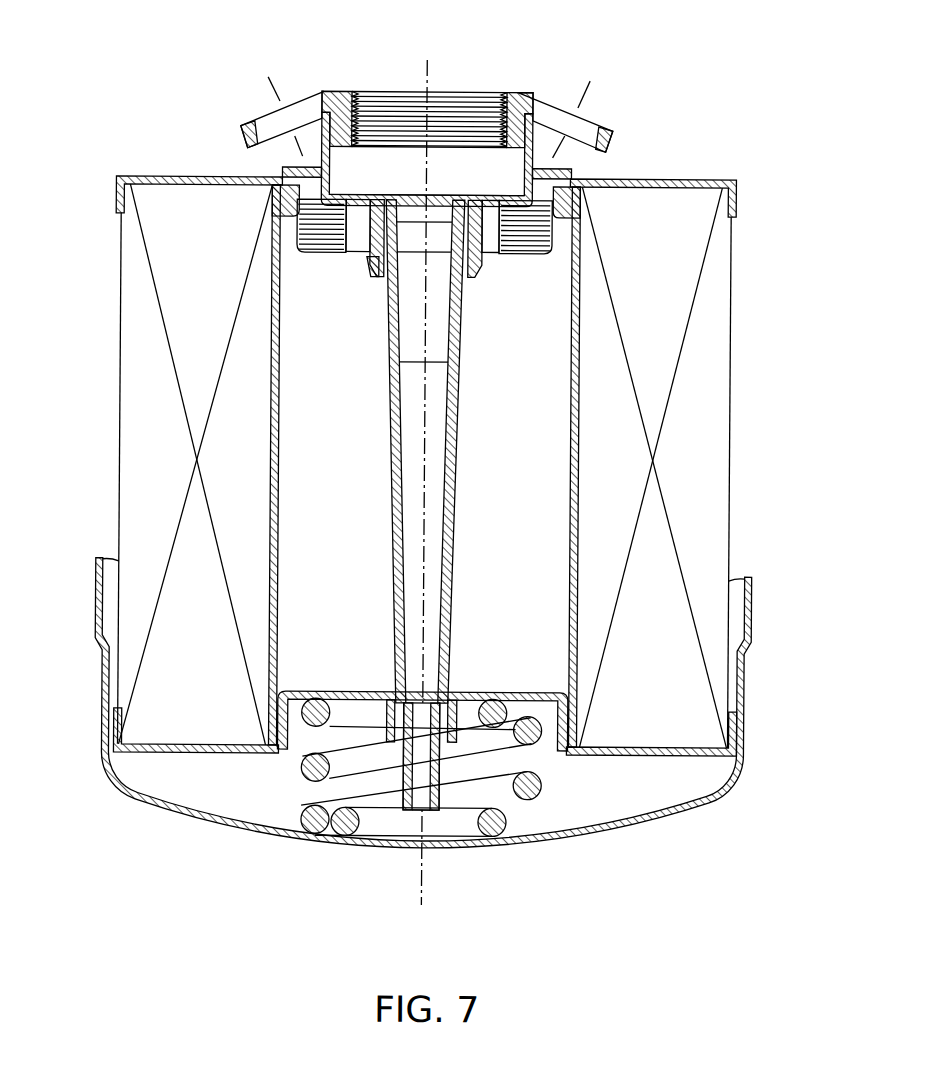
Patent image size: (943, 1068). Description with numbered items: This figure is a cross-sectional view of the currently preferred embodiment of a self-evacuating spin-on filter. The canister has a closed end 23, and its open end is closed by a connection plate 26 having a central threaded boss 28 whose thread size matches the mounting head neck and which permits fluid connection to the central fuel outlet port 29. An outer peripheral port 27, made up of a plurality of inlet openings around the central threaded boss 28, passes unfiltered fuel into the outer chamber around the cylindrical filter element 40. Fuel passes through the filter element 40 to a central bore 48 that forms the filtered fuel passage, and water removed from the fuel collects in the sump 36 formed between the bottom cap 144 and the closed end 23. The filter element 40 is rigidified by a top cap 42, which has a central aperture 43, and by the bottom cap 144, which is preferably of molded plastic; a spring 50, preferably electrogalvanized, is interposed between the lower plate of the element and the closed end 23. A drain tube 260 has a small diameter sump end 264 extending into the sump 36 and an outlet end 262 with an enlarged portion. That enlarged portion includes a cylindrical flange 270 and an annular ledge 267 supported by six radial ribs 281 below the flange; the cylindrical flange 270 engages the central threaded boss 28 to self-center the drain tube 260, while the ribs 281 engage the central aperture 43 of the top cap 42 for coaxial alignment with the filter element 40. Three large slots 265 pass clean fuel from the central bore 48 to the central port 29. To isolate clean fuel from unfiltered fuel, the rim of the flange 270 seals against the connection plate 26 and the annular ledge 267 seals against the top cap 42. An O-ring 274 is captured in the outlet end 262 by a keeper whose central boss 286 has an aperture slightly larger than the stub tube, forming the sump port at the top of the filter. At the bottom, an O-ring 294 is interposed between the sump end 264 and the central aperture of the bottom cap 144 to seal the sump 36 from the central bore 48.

The closed end 23 is at (215, 824).
The connection plate 26 is at (604, 131).
The outer peripheral port 27 is at (579, 116).
The central threaded boss 28 is at (521, 88).
The central fuel outlet port 29 is at (456, 166).
The sump 36 is at (238, 799).
The filter element 40 is at (741, 404).
The top cap 42 is at (150, 177).
The central aperture 43 is at (290, 235).
The central bore 48 is at (315, 468).
The spring 50 is at (360, 757).
The bottom cap 144 is at (182, 758).
The drain tube 260 is at (468, 456).
The outlet end 262 is at (469, 291).
The sump end 264 is at (447, 762).
The large slots 265 is at (346, 215).
The annular ledge 267 is at (288, 166).
The cylindrical flange 270 is at (283, 165).
The O-ring 274 is at (461, 233).
The radial ribs 281 is at (532, 240).
The central boss 286 is at (460, 195).
The O-ring 294 is at (456, 722).